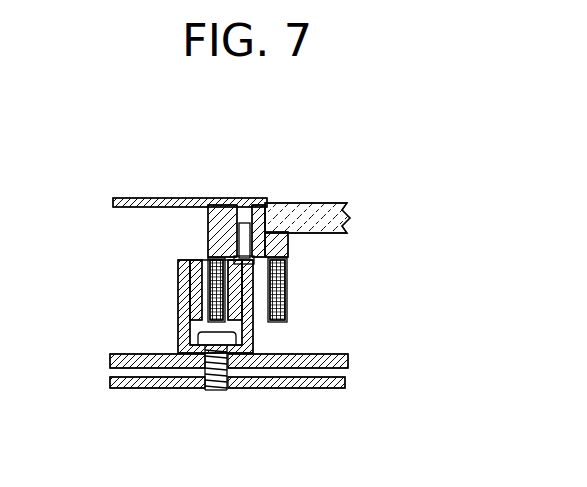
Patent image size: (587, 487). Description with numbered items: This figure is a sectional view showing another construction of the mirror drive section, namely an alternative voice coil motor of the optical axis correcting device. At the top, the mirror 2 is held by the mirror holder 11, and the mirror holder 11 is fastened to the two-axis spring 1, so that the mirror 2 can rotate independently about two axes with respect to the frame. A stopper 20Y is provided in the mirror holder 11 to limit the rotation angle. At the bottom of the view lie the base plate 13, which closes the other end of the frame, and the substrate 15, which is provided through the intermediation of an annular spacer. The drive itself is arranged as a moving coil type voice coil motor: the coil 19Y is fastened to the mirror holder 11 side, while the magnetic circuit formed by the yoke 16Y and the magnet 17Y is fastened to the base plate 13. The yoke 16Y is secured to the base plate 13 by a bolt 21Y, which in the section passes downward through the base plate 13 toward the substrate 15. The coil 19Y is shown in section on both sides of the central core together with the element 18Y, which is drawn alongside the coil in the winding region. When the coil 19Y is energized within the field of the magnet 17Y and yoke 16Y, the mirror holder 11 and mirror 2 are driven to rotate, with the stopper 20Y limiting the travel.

The two-axis spring 1 is at (172, 200).
The mirror 2 is at (326, 203).
The mirror holder 11 is at (290, 245).
The base plate 13 is at (349, 362).
The substrate 15 is at (346, 382).
The yoke 16Y is at (178, 266).
The magnet 17Y is at (178, 308).
The coil 18Y is at (283, 325).
The coil 19Y is at (285, 291).
The stopper 20Y is at (244, 224).
The bolt 21Y is at (214, 391).